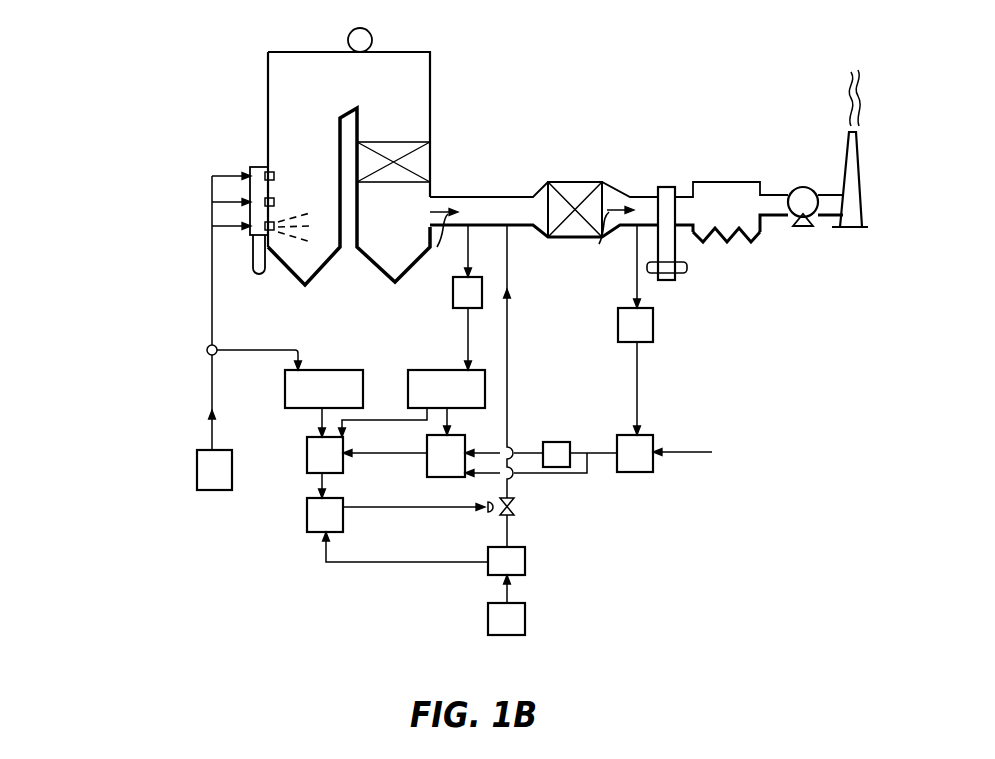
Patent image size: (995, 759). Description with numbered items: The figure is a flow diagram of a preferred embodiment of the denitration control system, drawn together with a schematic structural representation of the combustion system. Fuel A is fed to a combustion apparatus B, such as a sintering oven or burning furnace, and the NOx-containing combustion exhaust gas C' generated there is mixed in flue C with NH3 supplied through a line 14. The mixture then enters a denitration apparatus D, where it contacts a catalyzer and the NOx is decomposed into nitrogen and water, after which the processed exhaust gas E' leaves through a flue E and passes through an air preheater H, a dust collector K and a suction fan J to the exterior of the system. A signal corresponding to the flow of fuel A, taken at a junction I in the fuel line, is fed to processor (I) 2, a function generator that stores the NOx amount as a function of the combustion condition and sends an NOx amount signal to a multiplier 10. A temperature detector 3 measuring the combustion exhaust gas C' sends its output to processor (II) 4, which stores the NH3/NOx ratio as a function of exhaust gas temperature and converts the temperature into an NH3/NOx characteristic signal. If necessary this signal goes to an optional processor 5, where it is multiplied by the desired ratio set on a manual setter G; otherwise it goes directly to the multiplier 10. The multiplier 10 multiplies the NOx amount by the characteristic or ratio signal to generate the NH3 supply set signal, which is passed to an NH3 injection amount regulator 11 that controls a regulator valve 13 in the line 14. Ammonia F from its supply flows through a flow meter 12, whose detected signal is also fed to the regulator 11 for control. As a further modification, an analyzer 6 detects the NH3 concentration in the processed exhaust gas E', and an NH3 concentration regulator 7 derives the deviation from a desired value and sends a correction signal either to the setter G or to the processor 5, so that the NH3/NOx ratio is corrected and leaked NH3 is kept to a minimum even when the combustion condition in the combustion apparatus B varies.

The combustion apparatus B is at (300, 52).
The flue C is at (457, 198).
The combustion exhaust gas C' is at (449, 242).
The denitration apparatus D is at (566, 182).
The flue E is at (621, 194).
The processed exhaust gas E' is at (620, 243).
The air preheater H is at (672, 187).
The dust collector K is at (730, 182).
The suction fan J is at (806, 187).
The fuel flow signal junction I is at (207, 347).
The fuel A is at (197, 470).
The processor (I) 2 is at (311, 381).
The temperature detector 3 is at (453, 300).
The processor (II) 4 is at (478, 384).
The processor 5 is at (430, 462).
The analyzer 6 is at (653, 325).
The NH3 concentration regulator 7 is at (643, 471).
The multiplier 10 is at (306, 443).
The NH3 injection amount regulator 11 is at (309, 531).
The flow meter 12 is at (525, 562).
The regulator valve 13 is at (514, 503).
The line 14 is at (507, 252).
The manual setter G is at (543, 448).
The ammonia (NH3) F is at (525, 620).